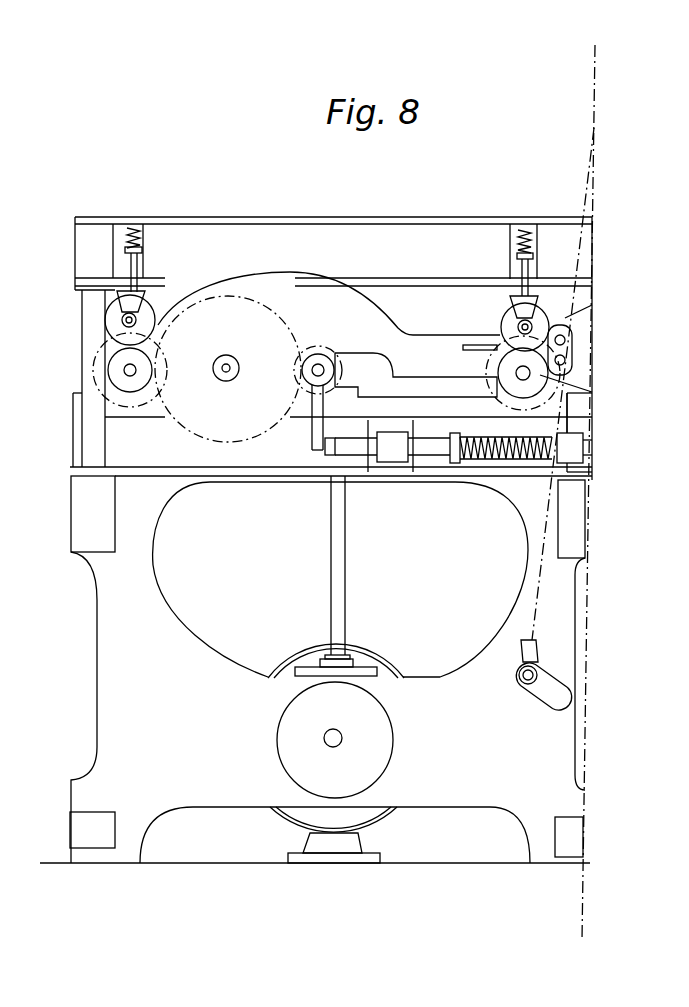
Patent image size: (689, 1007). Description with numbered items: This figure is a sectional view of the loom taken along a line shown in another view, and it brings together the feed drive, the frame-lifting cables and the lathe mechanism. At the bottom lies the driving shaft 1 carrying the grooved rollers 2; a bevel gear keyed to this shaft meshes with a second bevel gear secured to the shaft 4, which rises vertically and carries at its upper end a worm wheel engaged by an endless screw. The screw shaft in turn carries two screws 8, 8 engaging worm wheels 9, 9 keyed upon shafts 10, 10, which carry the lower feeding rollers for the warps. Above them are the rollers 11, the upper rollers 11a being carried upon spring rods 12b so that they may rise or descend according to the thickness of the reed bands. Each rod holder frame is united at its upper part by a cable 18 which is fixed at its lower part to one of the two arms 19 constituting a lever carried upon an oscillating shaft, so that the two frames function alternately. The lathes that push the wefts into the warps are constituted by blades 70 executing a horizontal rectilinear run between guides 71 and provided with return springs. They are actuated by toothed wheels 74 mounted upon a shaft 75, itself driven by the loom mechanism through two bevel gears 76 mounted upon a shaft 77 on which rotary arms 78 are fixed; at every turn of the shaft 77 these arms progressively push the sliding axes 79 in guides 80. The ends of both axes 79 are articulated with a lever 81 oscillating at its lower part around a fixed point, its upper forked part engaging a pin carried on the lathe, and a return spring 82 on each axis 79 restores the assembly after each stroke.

The driving shaft 1 is at (340, 744).
The grooved rollers 2 is at (388, 643).
The shaft 4 is at (338, 570).
The screws 8 is at (586, 498).
The worm wheels 9 is at (170, 365).
The shafts 10 is at (128, 371).
The roller 11 is at (108, 360).
The upper rollers 11a is at (147, 316).
The spring rods 12b is at (135, 240).
The cable 18 is at (586, 160).
The arms 19 is at (578, 713).
The blades 70 is at (466, 348).
The guides 71 is at (556, 326).
The toothed wheels 74 is at (270, 306).
The shaft 75 is at (229, 372).
The bevel gears 76 is at (318, 352).
The shaft 77 is at (323, 373).
The rotary arms 78 is at (318, 440).
The sliding axes 79 is at (433, 457).
The guides 80 is at (390, 465).
The lever 81 is at (580, 413).
The return spring 82 is at (495, 452).